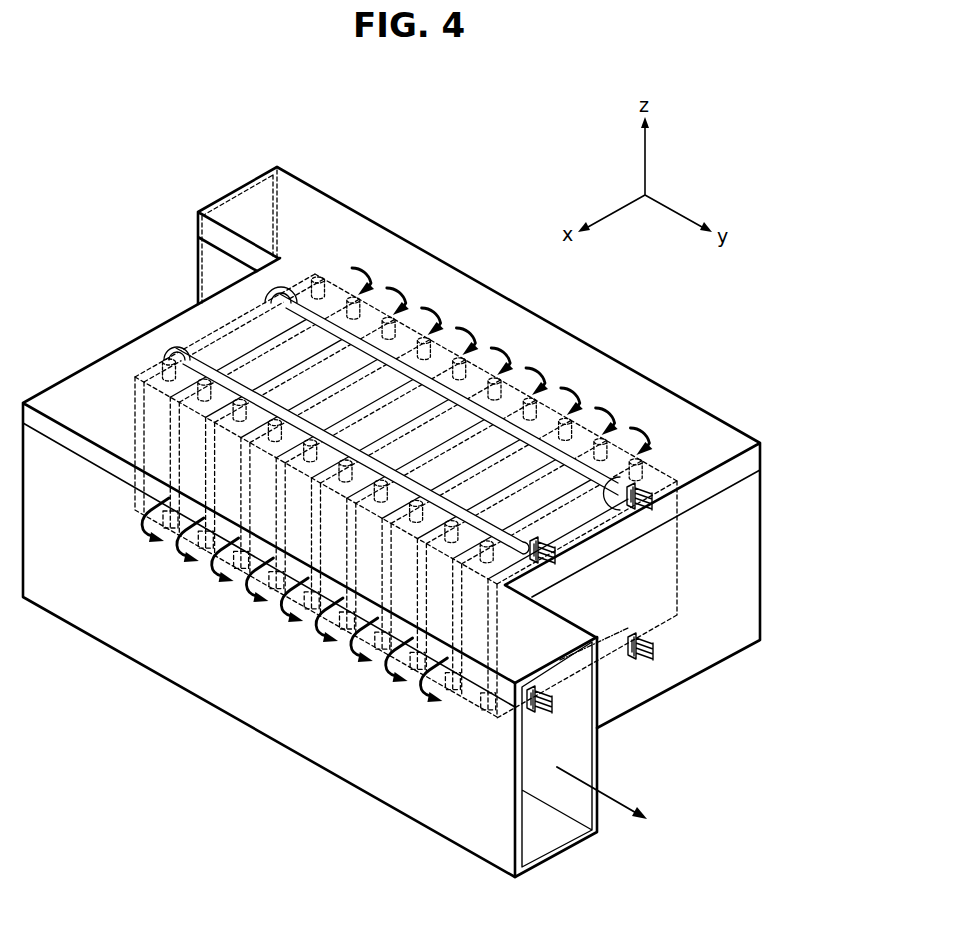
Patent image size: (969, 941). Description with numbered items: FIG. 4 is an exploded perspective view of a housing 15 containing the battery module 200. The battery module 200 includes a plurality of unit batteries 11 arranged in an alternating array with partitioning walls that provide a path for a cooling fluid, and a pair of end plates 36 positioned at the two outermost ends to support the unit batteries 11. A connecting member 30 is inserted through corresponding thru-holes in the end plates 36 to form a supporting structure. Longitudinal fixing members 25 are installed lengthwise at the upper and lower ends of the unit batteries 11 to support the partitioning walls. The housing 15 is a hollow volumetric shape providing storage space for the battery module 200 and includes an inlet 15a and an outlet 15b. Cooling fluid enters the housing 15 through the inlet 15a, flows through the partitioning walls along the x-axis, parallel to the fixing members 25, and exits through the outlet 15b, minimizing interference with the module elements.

The battery module 200 is at (411, 127).
The housing 15 is at (240, 743).
The inlet 15a is at (226, 193).
The outlet 15b is at (557, 843).
The unit battery 11 is at (149, 366).
The fixing member 25 is at (230, 362).
The connecting member 30 is at (189, 336).
The end plate 36 is at (117, 420).